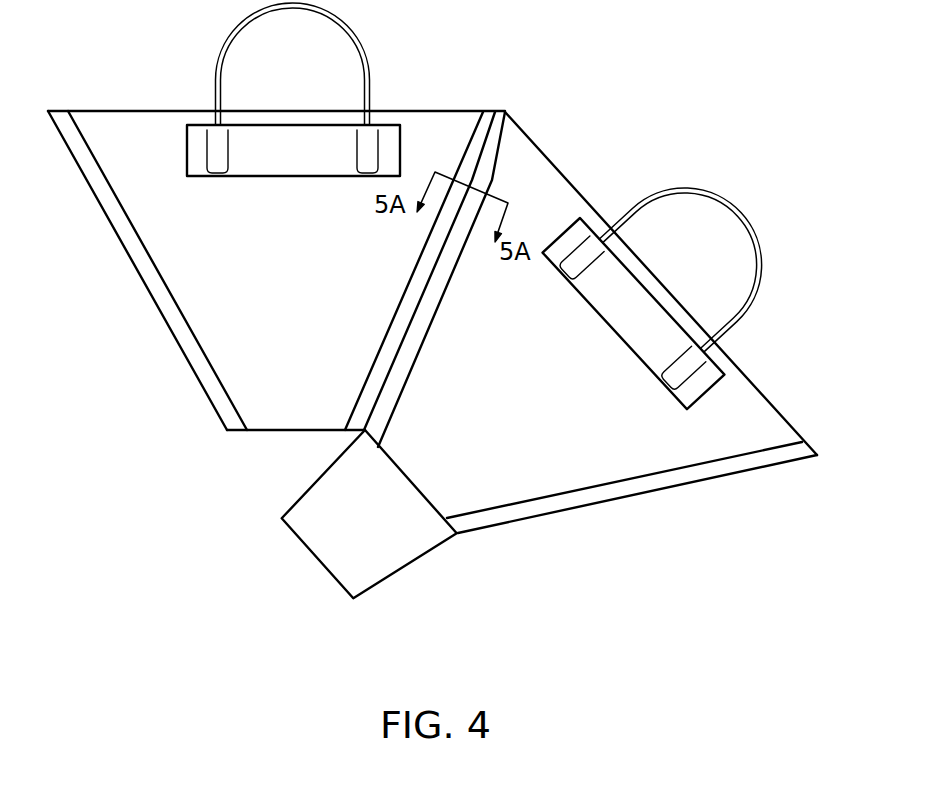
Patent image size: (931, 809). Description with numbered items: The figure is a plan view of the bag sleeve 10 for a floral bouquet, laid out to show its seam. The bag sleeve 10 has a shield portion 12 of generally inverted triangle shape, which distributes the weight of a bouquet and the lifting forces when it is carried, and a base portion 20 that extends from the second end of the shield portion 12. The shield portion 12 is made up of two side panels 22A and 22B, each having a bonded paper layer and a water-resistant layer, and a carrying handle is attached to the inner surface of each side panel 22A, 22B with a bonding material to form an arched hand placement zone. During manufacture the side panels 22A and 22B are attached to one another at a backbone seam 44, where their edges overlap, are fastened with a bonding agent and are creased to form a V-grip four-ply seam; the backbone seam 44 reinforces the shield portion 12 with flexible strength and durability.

The bag sleeve 10 is at (168, 393).
The shield portion 12 is at (703, 445).
The base portion 20 is at (413, 563).
The side panel 22A is at (193, 293).
The side panel 22B is at (585, 455).
The backbone seam 44 is at (508, 113).